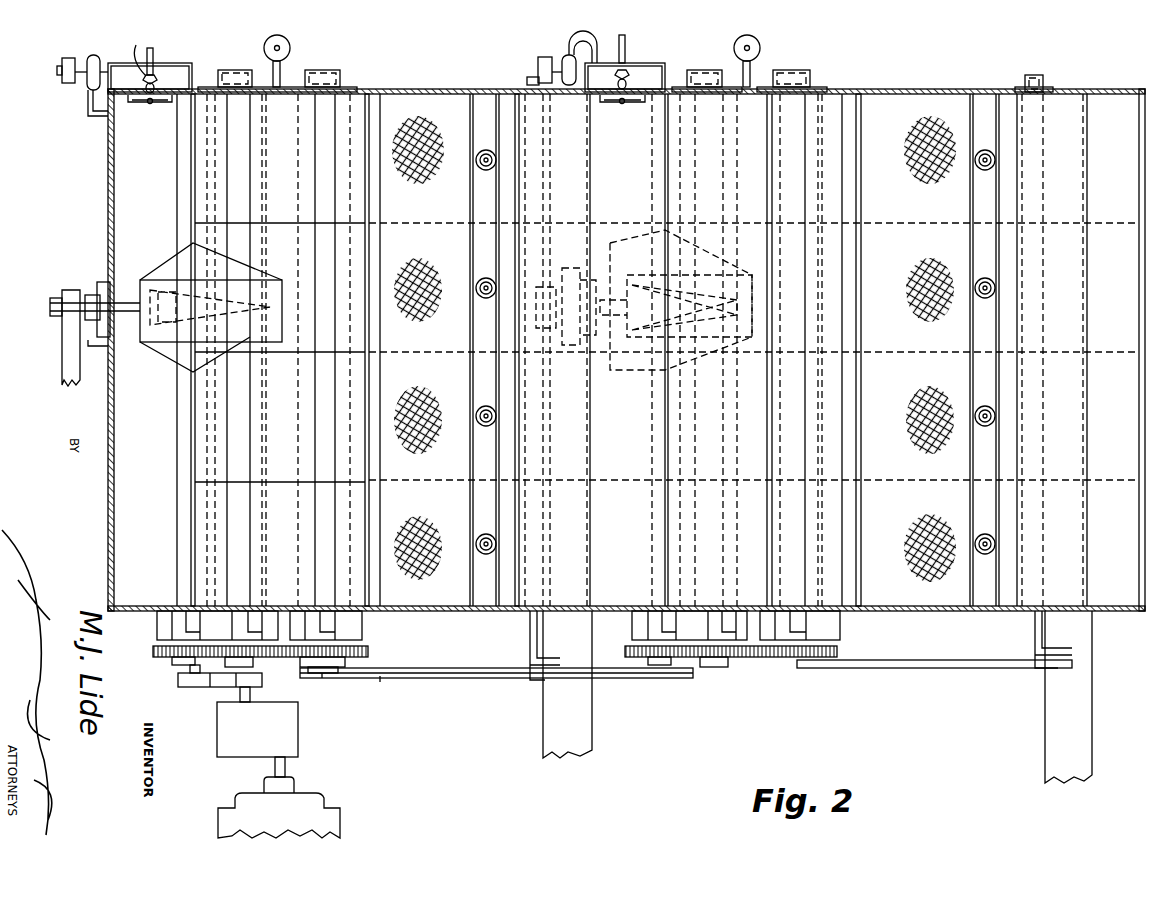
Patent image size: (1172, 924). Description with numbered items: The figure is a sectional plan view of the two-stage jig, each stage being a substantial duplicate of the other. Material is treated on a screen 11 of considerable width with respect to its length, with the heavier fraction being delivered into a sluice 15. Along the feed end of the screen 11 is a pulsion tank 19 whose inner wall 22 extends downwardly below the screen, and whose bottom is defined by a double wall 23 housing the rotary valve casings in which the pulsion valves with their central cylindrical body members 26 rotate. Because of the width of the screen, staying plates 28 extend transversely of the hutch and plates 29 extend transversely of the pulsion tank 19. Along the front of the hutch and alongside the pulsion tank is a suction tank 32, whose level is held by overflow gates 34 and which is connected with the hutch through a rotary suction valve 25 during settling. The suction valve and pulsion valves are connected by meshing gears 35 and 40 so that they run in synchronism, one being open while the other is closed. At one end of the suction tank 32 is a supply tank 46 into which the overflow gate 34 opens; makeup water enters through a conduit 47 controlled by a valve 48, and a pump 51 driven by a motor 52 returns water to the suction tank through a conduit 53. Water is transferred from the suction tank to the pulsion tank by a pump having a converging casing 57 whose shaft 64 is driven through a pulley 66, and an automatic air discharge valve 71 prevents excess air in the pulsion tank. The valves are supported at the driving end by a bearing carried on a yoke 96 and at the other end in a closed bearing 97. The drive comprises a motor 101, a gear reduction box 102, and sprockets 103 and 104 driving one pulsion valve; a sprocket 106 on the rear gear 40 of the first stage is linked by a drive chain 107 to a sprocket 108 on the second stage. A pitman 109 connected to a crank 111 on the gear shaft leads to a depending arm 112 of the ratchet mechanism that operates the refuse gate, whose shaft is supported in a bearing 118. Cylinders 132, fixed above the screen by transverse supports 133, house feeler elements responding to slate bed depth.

The screen 11 is at (418, 115).
The sluice 15 is at (580, 732).
The pulsion tank 19 is at (296, 192).
The inner wall 22 is at (372, 372).
The double wall 23 is at (280, 115).
The rotary suction valve 25 is at (1110, 598).
The central cylindrical body member 26 is at (240, 238).
The plates 28 is at (398, 226).
The plates 29 is at (193, 474).
The suction tank 32 is at (130, 178).
The overflow gate 34 is at (142, 100).
The gear 35 is at (158, 660).
The gear 40 is at (360, 656).
The supply tank 46 is at (180, 70).
The conduit 47 is at (156, 58).
The valve 48 is at (129, 50).
The pump 51 is at (90, 55).
The motor 52 is at (68, 84).
The conduit 53 is at (86, 108).
The casing 57 is at (640, 268).
The pump shaft 64 is at (58, 303).
The pulley 66 is at (66, 330).
The automatic air discharge valve 71 is at (290, 44).
The yoke 96 is at (160, 630).
The closed bearing 97 is at (222, 70).
The motor 101 is at (338, 818).
The gear reduction box 102 is at (298, 750).
The sprocket 103 is at (262, 680).
The sprocket 104 is at (186, 690).
The sprocket 106 is at (344, 674).
The drive chain 107 is at (420, 668).
The sprocket 108 is at (692, 676).
The pitman 109 is at (438, 678).
The crank 111 is at (326, 680).
The depending arm 112 is at (568, 680).
The bearing 118 is at (536, 72).
The cylinder 132 is at (482, 168).
The supports 133 is at (496, 242).